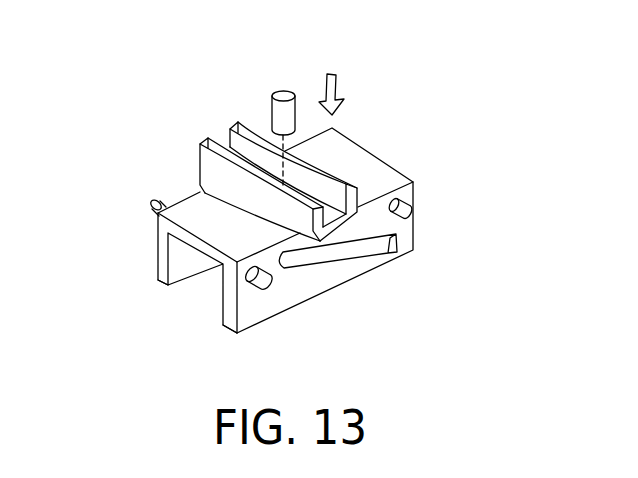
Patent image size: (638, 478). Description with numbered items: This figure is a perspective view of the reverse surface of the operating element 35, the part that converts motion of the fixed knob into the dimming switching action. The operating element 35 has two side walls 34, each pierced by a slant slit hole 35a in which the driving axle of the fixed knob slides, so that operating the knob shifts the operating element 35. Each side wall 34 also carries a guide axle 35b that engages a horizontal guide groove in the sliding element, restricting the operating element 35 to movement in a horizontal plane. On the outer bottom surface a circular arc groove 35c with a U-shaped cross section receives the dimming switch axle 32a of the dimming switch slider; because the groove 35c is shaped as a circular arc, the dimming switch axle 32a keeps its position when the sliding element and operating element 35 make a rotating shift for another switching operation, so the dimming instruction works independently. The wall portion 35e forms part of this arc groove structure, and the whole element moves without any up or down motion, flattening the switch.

The dimming switch axle 32a is at (285, 88).
The side walls 34 is at (225, 301).
The operating element 35 is at (307, 289).
The slant slit hole 35a is at (342, 255).
The guide axle 35b is at (153, 205).
The circular arc groove 35c is at (236, 140).
The curved front wall 35e is at (207, 172).